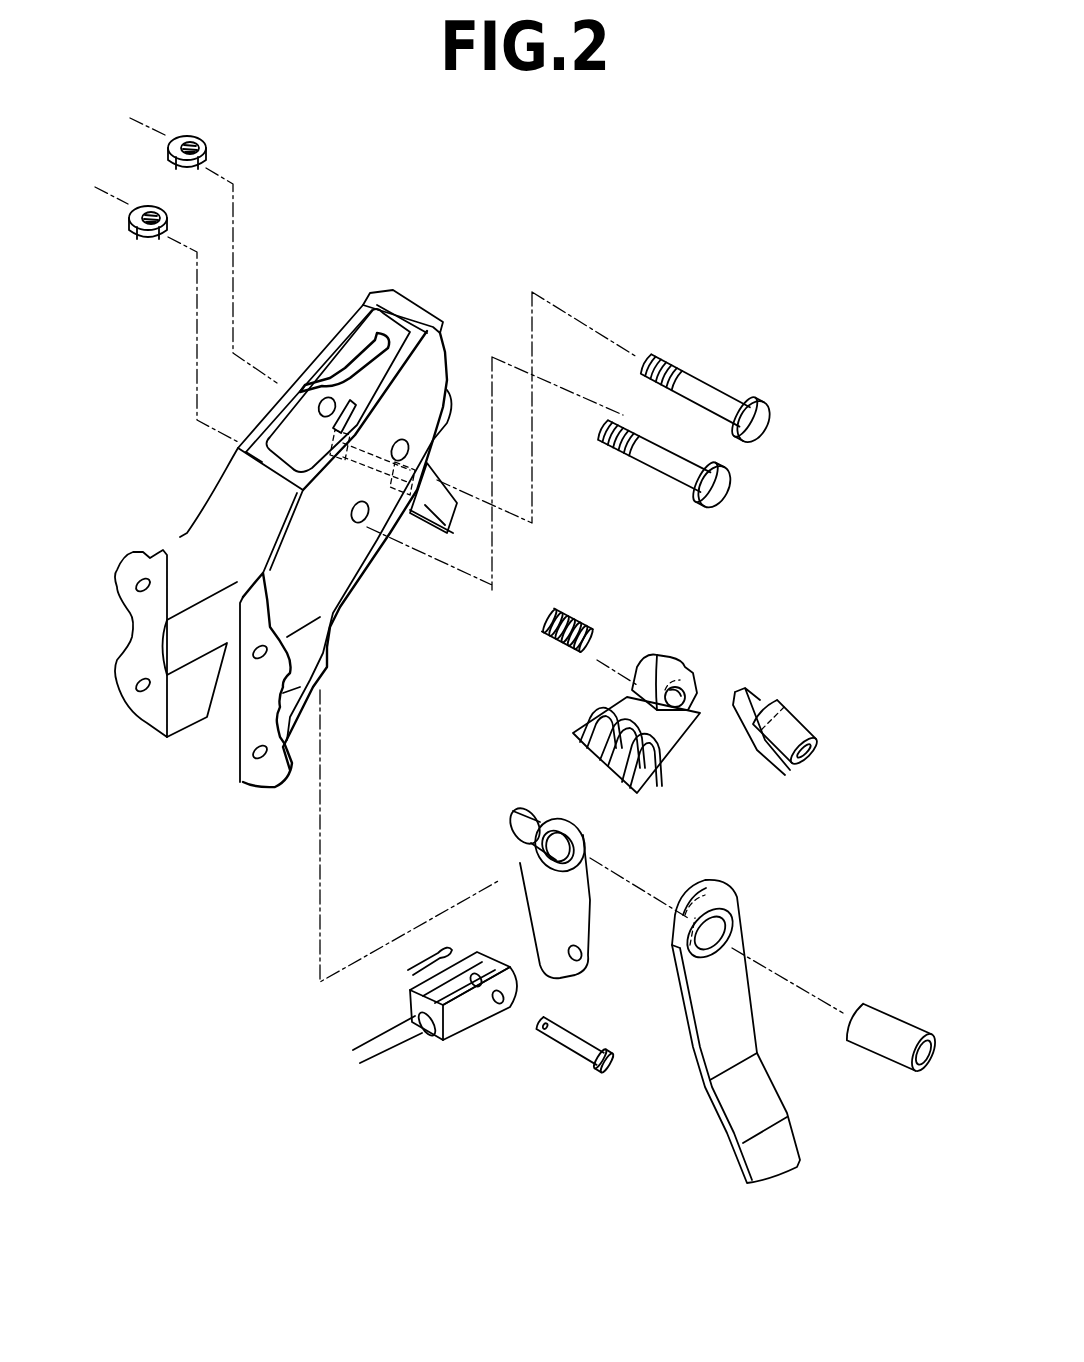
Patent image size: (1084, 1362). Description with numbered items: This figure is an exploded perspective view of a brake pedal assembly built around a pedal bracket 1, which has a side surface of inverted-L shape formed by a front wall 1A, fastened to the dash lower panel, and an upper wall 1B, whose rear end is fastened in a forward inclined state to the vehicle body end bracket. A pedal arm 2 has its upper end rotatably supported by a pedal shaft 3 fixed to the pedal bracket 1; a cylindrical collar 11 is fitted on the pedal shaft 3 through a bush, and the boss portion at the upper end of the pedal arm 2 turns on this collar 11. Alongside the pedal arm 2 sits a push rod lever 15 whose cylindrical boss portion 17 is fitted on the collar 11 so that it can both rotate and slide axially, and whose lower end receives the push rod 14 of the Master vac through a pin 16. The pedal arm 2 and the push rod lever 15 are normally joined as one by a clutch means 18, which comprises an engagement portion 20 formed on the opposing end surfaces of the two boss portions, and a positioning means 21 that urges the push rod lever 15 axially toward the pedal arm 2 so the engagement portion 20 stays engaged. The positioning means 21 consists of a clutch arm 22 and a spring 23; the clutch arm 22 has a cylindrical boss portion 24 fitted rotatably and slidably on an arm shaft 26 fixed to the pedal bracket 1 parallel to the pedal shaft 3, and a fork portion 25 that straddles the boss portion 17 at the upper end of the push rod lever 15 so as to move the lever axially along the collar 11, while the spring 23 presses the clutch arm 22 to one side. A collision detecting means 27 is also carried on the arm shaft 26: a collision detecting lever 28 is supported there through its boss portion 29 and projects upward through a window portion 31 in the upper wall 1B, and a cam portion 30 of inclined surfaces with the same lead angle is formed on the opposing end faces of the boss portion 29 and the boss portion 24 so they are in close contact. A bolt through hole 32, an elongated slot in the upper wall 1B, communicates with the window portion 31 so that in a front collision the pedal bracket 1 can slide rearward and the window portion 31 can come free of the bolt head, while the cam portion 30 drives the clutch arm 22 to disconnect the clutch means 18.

The pedal bracket 1 is at (153, 555).
The front wall 1A is at (137, 703).
The upper wall 1B is at (246, 455).
The pedal arm 2 is at (717, 1123).
The pedal shaft 3 is at (670, 460).
The collar 11 is at (873, 1033).
The push rod 14 is at (390, 1040).
The push rod lever 15 is at (580, 920).
The pin 16 is at (563, 1040).
The boss portion 17 is at (507, 817).
The clutch means 18 is at (782, 808).
The engagement portion 20 is at (593, 833).
The positioning means 21 is at (657, 783).
The clutch arm 22 is at (677, 735).
The spring 23 is at (583, 612).
The boss portion 24 is at (660, 670).
The fork portion 25 is at (583, 732).
The arm shaft 26 is at (705, 397).
The collision detecting means 27 is at (865, 583).
The collision detecting lever 28 is at (750, 685).
The boss portion 29 is at (830, 753).
The cam portion 30 is at (700, 688).
The window portion 31 is at (292, 415).
The bolt through hole 32 is at (380, 335).